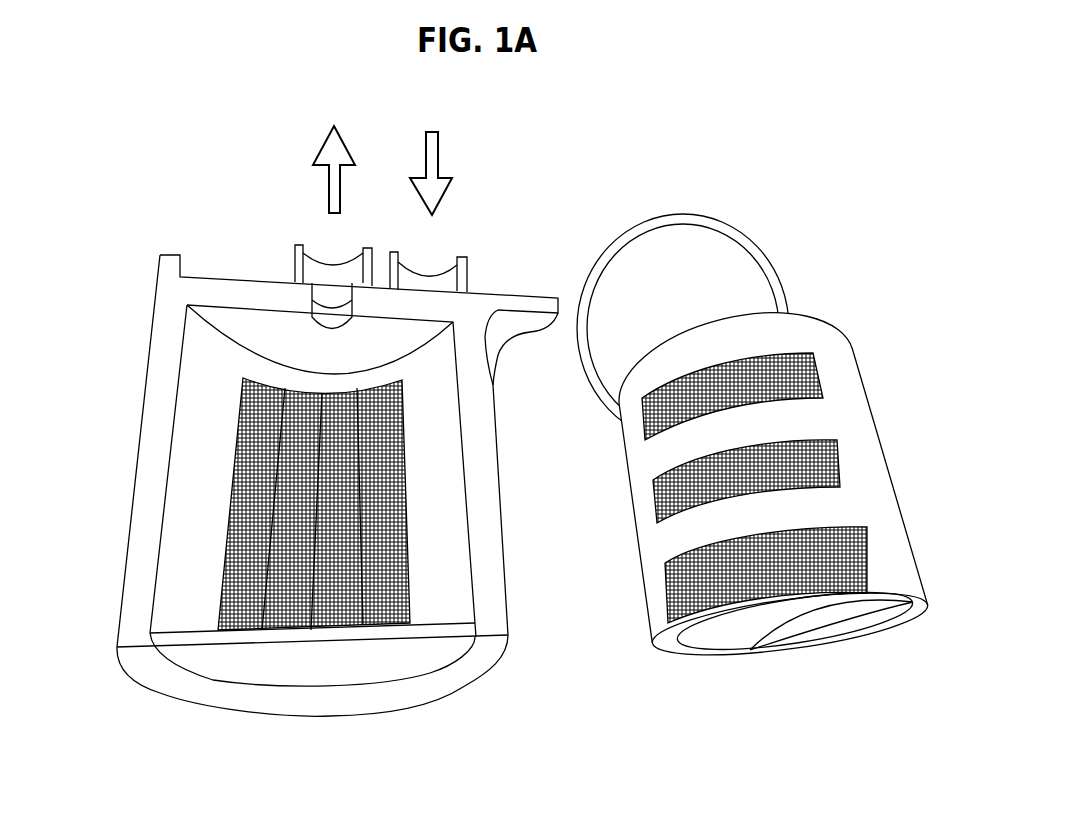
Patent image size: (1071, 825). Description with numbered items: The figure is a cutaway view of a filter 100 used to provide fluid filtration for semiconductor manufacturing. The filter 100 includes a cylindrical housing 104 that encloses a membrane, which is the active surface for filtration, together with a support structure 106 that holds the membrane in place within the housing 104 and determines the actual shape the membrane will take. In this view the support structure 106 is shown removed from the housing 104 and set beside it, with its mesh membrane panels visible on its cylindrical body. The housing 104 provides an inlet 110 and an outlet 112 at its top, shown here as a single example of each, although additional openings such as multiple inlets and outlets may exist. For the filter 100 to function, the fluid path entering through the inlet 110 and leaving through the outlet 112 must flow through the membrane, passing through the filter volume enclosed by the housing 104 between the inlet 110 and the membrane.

The filter 100 is at (135, 162).
The housing 104 is at (127, 598).
The support structure 106 is at (683, 337).
The inlet 110 is at (318, 265).
The outlet 112 is at (437, 276).